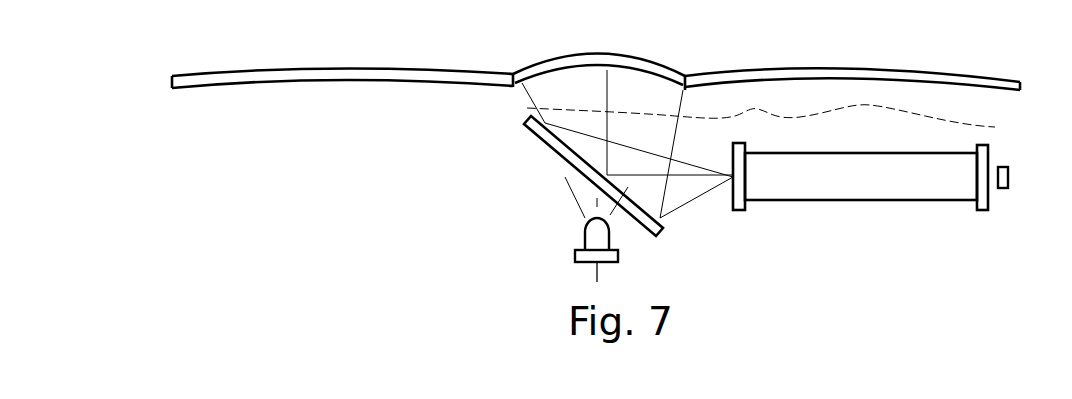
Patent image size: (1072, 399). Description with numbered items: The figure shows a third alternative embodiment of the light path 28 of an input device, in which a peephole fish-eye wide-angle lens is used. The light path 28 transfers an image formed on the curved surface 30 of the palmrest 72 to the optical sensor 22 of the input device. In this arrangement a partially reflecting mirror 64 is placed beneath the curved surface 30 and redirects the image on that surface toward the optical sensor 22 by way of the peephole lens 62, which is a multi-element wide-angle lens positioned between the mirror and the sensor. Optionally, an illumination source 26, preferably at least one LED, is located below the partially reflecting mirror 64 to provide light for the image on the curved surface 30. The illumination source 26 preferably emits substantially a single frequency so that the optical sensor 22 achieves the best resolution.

The curved surface 30 is at (653, 67).
The palmrest 72 is at (780, 68).
The light path 28 is at (745, 114).
The partially reflecting mirror 64 is at (547, 147).
The illumination source 26 is at (575, 260).
The peephole lens 62 is at (873, 170).
The optical sensor 22 is at (1010, 179).